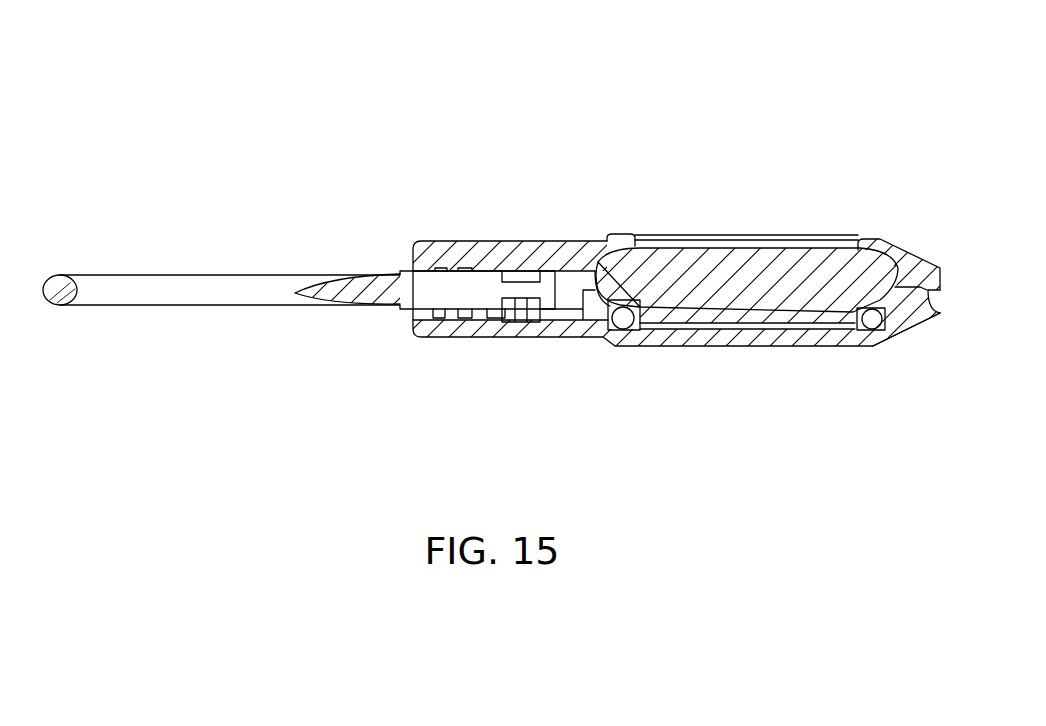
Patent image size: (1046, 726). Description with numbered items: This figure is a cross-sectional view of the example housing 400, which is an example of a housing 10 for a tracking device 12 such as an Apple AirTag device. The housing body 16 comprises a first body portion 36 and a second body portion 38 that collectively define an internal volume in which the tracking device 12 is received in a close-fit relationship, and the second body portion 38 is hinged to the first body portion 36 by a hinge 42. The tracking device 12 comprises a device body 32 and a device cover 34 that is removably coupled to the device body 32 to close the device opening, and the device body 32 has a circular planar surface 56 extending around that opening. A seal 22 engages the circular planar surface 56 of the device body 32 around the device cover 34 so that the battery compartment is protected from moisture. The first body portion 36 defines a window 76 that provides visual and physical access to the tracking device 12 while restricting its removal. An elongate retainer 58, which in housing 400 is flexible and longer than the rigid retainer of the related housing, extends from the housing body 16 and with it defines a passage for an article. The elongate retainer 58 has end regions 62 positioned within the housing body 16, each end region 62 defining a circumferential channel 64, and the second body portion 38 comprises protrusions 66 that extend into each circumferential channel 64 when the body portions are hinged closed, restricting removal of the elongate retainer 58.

The housing 10 is at (854, 36).
The housing 400 is at (851, 77).
The elongate retainer 58 is at (183, 272).
The circumferential channel 64 is at (512, 270).
The end region 62 is at (529, 262).
The window 76 is at (640, 248).
The first body portion 36 is at (721, 237).
The tracking device 12 is at (763, 243).
The device body 32 is at (845, 238).
The housing body 16 is at (864, 238).
The hinge 42 is at (942, 273).
The protrusion 66 is at (497, 320).
The seal 22 is at (630, 300).
The second body portion 38 is at (725, 346).
The device cover 34 is at (783, 329).
The circular planar surface 56 is at (875, 330).